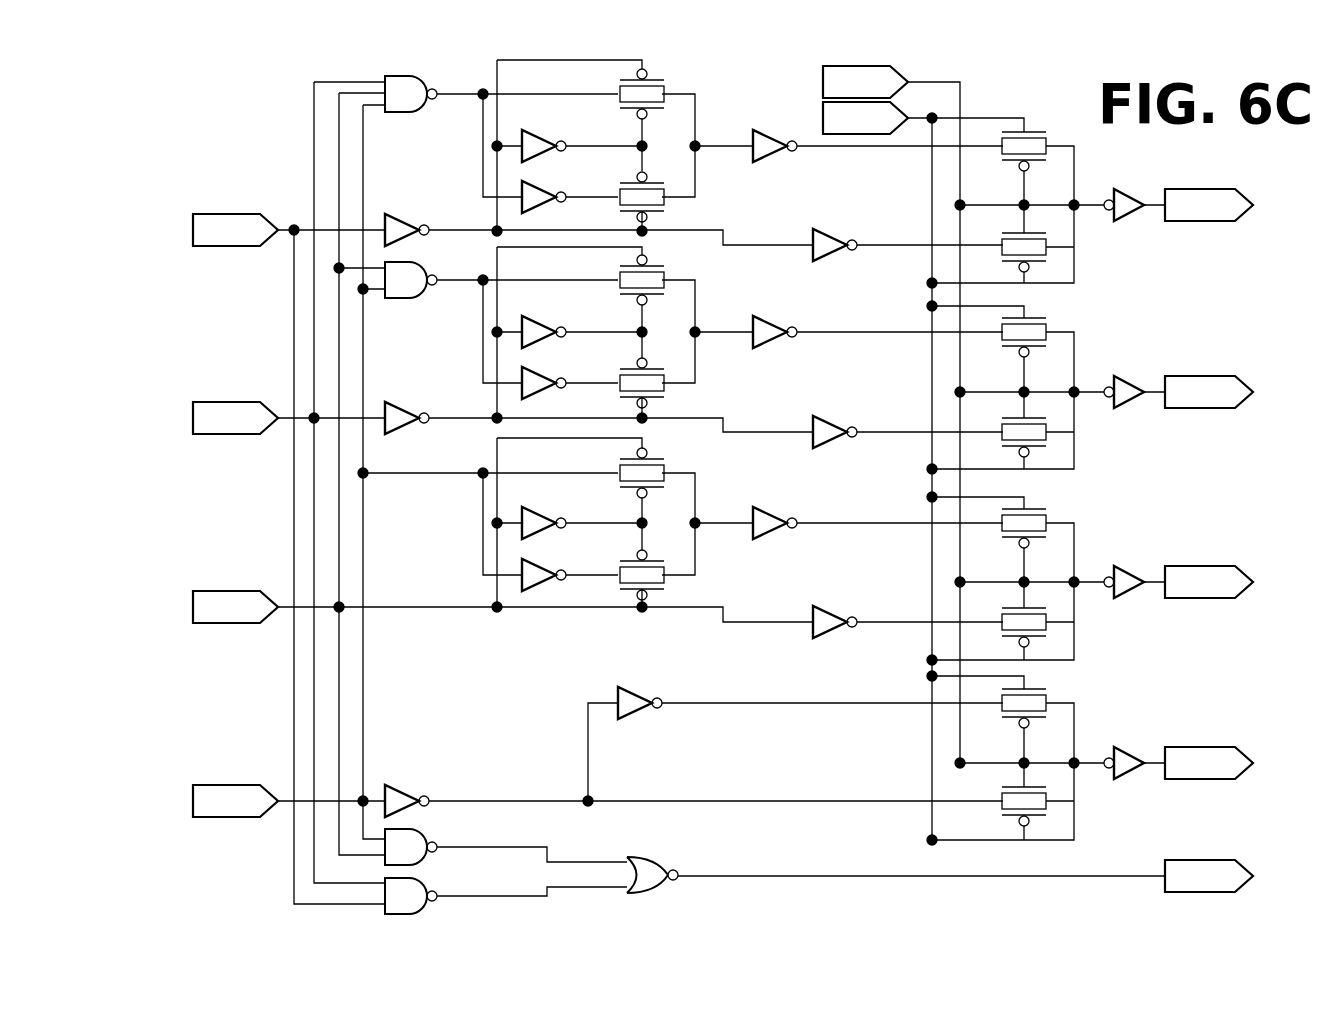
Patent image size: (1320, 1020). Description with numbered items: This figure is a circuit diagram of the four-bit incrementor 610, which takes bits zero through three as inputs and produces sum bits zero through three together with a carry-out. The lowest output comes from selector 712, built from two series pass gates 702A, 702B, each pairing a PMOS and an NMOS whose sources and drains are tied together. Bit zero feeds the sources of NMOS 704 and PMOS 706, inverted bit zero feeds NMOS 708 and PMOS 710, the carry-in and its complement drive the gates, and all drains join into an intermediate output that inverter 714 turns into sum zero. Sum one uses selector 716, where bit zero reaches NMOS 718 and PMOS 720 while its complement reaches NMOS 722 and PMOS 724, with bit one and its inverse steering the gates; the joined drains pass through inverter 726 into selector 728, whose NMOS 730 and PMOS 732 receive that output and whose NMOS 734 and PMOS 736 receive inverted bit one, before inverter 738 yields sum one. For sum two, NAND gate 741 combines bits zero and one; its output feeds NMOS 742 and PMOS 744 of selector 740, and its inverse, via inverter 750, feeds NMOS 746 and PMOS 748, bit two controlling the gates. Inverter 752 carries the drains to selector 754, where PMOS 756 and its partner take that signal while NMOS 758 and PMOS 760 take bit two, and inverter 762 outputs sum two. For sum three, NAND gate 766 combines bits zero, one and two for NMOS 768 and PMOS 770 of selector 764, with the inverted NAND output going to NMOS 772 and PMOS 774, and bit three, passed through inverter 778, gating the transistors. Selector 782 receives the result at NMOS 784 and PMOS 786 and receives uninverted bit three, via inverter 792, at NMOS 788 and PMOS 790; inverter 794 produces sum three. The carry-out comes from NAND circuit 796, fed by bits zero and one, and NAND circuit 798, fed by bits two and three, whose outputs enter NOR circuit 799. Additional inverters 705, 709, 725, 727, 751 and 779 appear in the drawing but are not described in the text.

The 4-bit incrementor 610 is at (243, 135).
The NAND gate 766 is at (501, 94).
The NAND gate 741 is at (501, 280).
The NAND circuit 796 is at (506, 847).
The NAND circuit 798 is at (506, 896).
The inverter 778 is at (403, 219).
The inverter 709 is at (403, 789).
The inverter 705 is at (633, 689).
The NOR circuit 799 is at (660, 859).
The selector 764 is at (740, 299).
The PMOS 770 is at (622, 85).
The NMOS 768 is at (624, 110).
The PMOS 774 is at (660, 188).
The NMOS 772 is at (660, 215).
The inverter 725 is at (538, 136).
The inverter 779 is at (538, 188).
The selector 740 is at (740, 335).
The PMOS 744 is at (622, 271).
The NMOS 742 is at (624, 297).
The PMOS 748 is at (660, 374).
The NMOS 746 is at (660, 400).
The inverter 751 is at (538, 323).
The inverter 750 is at (538, 375).
The inverter 752 is at (773, 323).
The selector 716 is at (683, 525).
The PMOS 720 is at (622, 464).
The NMOS 718 is at (624, 488).
The PMOS 724 is at (660, 566).
The NMOS 722 is at (660, 591).
The inverter 726 is at (538, 566).
The inverter 727 is at (773, 514).
The selector 782 is at (989, 200).
The NMOS 784 is at (1005, 138).
The PMOS 786 is at (1005, 162).
The NMOS 788 is at (1005, 238).
The PMOS 790 is at (1005, 262).
The inverter 792 is at (825, 234).
The inverter 794 is at (1115, 187).
The selector 754 is at (1046, 387).
The PMOS 756 is at (1004, 346).
The NMOS 758 is at (1004, 424).
The PMOS 760 is at (1004, 446).
The inverter 762 is at (1118, 373).
The selector 728 is at (1046, 578).
The NMOS 730 is at (1004, 515).
The PMOS 732 is at (1004, 536).
The NMOS 734 is at (1004, 614).
The PMOS 736 is at (1004, 636).
The inverter 738 is at (1118, 564).
The selector 712 is at (1050, 759).
The pass gate 702A is at (1037, 700).
The NMOS 704 is at (1003, 696).
The PMOS 706 is at (1003, 718).
The pass gate 702B is at (1048, 813).
The NMOS 708 is at (1003, 793).
The PMOS 710 is at (1003, 816).
The inverter 714 is at (1126, 776).